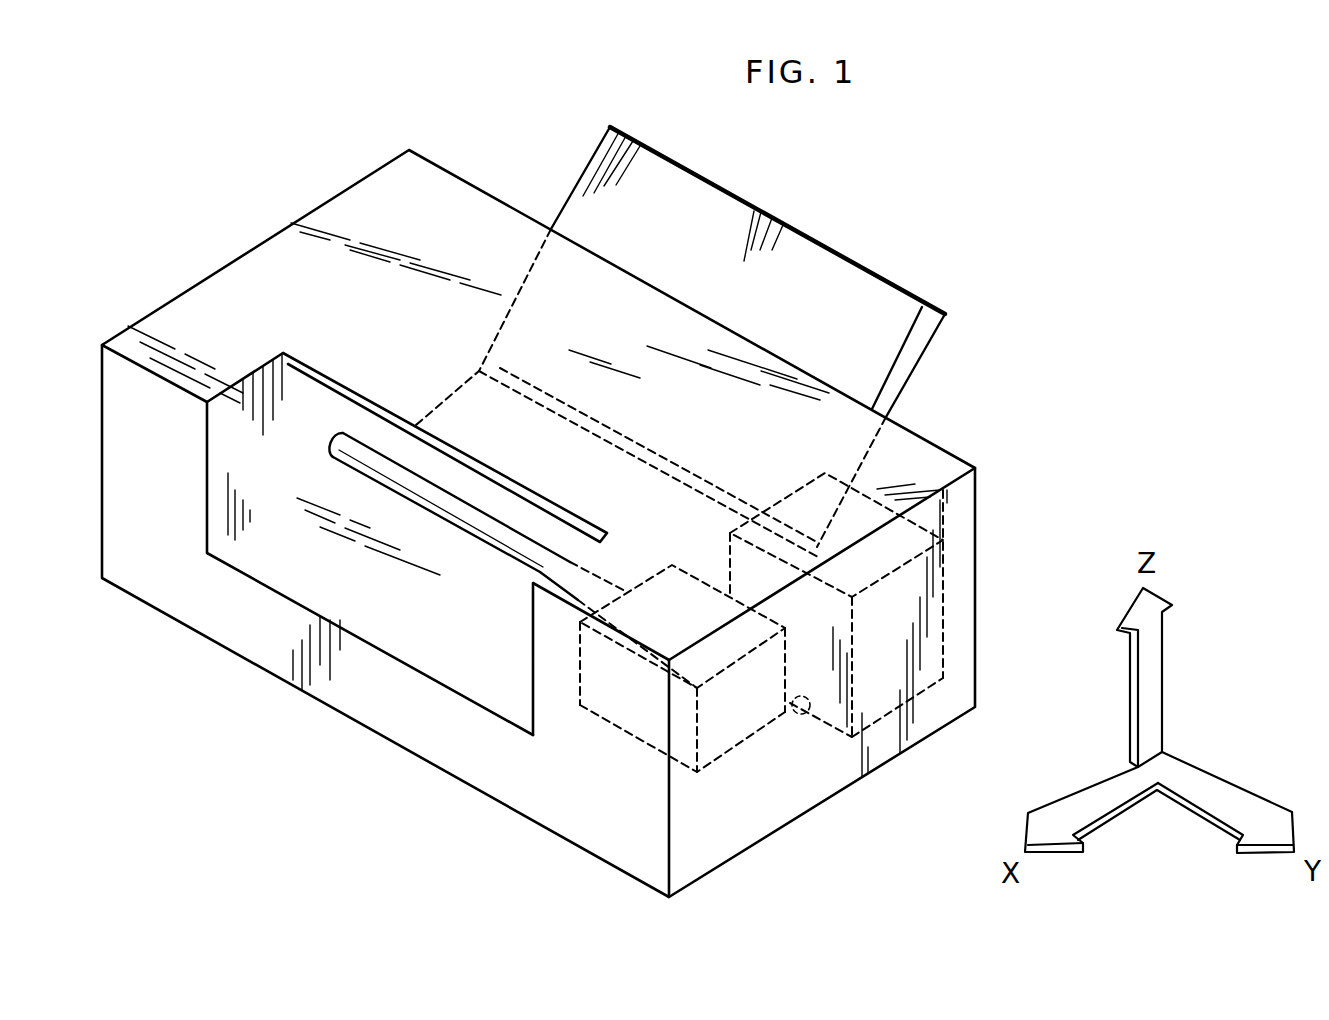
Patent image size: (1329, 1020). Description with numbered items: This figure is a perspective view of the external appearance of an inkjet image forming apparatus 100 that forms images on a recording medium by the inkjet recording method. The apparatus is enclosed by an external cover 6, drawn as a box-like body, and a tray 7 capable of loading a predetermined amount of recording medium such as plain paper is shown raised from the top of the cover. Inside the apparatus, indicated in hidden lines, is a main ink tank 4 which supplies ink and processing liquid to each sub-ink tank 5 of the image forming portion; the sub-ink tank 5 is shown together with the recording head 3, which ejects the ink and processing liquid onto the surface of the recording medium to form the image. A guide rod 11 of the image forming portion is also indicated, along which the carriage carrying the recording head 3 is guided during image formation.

The image forming apparatus 100 is at (277, 186).
The external cover 6 is at (934, 456).
The tray 7 is at (862, 286).
The recording head 3 is at (513, 560).
The sub-ink tank 5 is at (620, 712).
The main ink tank 4 is at (937, 613).
The guide rod 11 is at (797, 716).